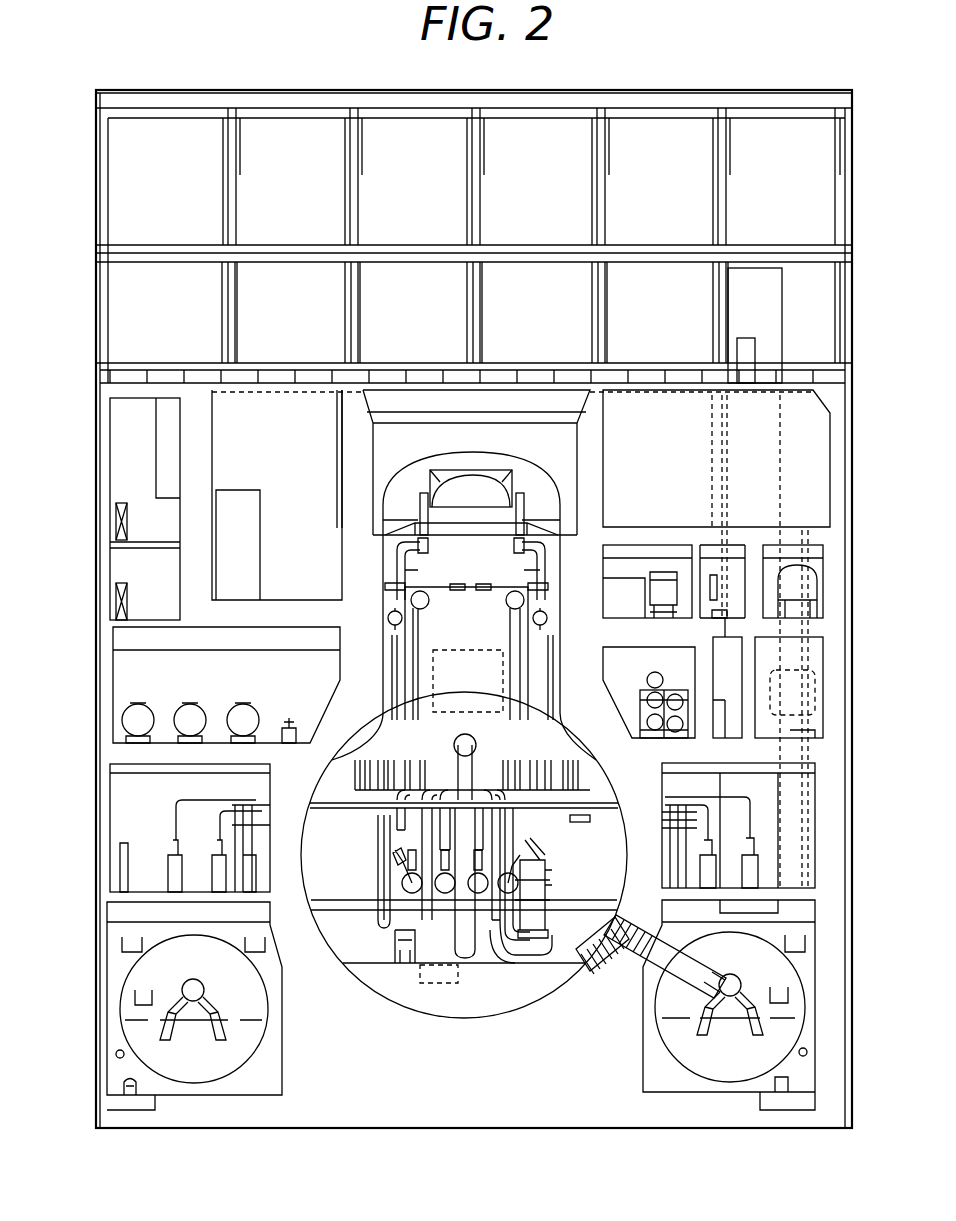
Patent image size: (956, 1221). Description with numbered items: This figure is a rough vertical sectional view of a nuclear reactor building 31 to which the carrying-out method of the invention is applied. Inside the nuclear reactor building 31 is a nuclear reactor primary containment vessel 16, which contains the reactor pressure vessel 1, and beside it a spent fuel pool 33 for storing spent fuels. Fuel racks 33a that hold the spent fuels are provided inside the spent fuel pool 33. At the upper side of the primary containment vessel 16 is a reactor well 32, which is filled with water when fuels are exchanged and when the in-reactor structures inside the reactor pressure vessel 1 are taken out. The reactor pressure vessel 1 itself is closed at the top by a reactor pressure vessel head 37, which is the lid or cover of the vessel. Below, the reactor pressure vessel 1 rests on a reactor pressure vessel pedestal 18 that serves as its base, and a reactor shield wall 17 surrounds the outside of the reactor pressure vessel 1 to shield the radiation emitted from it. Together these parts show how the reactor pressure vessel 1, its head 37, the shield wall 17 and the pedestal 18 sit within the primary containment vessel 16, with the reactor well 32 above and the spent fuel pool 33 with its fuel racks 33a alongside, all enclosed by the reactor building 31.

The nuclear reactor building 31 is at (94, 343).
The spent fuel pool 33 is at (283, 425).
The fuel racks 33a is at (241, 498).
The reactor well 32 is at (408, 443).
The reactor pressure vessel head 37 is at (477, 488).
The nuclear reactor primary containment vessel 16 is at (383, 589).
The reactor pressure vessel 1 is at (490, 572).
The reactor shield wall 17 is at (497, 625).
The reactor pressure vessel pedestal 18 is at (415, 912).